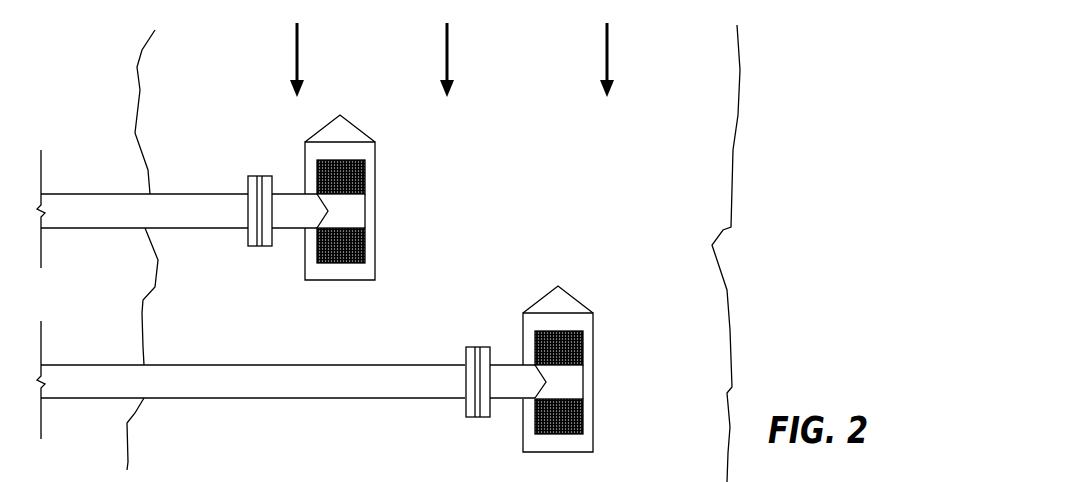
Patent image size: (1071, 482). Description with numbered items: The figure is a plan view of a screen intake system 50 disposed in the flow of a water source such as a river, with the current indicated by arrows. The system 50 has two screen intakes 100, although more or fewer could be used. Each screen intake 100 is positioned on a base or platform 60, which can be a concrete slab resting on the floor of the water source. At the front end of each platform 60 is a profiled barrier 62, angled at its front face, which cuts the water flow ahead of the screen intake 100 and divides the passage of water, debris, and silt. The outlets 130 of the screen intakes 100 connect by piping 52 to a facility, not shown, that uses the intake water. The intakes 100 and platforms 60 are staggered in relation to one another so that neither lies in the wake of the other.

The screen intake system 50 is at (832, 91).
The piping 52 is at (180, 194).
The platform 60 is at (375, 170).
The profiled barrier 62 is at (365, 132).
The screen intake 100 is at (365, 210).
The outlet 130 is at (283, 228).